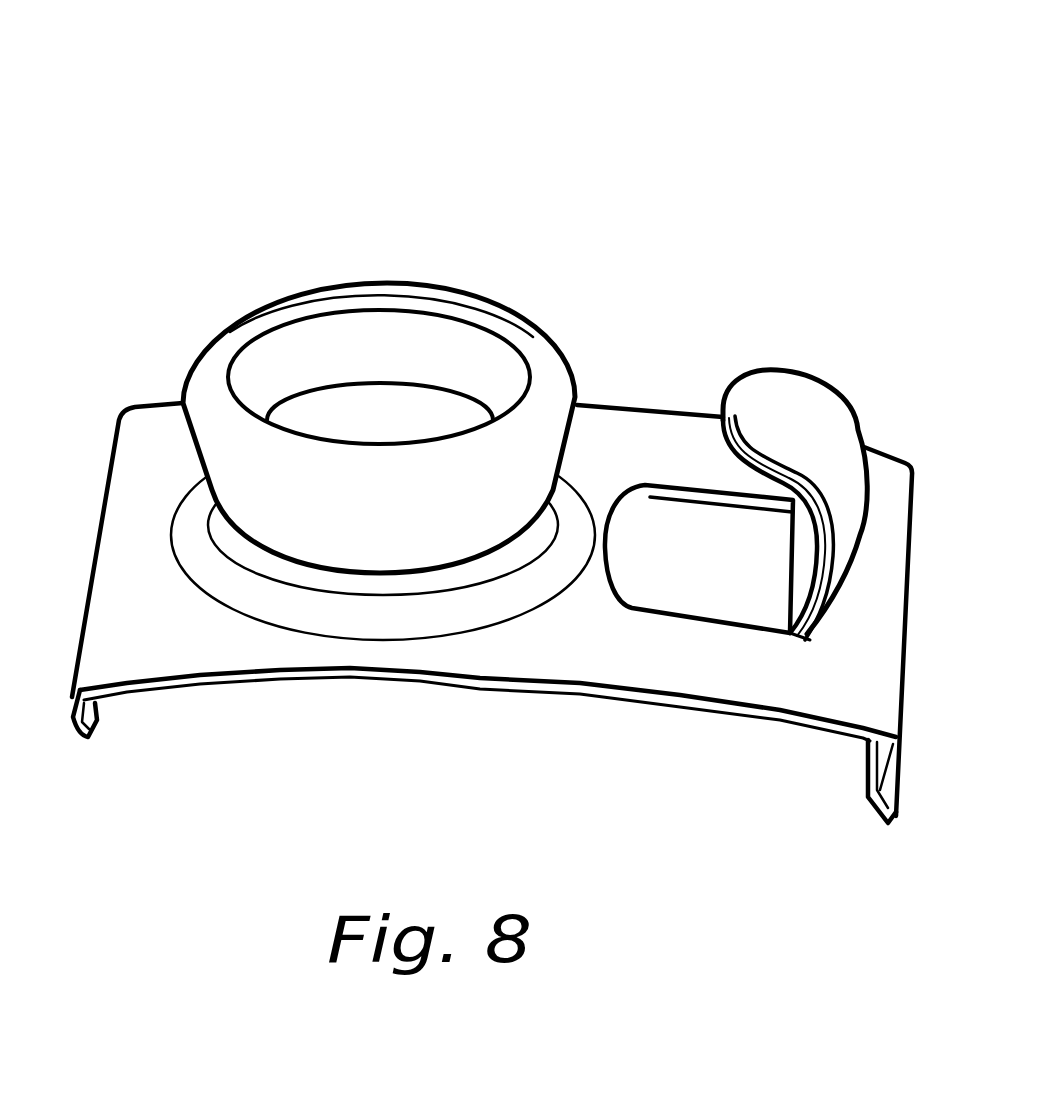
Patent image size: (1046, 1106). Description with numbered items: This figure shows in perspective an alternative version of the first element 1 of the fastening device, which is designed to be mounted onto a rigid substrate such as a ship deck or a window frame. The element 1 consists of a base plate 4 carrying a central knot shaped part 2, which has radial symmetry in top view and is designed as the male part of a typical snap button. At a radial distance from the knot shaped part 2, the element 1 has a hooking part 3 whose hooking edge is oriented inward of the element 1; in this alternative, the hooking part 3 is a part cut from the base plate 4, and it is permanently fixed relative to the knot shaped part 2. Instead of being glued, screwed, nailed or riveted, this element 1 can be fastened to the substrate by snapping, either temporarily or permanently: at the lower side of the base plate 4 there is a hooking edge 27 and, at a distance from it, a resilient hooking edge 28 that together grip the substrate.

The first element 1 is at (555, 123).
The knot shaped part 2 is at (193, 315).
The hooking part 3 is at (810, 347).
The base plate 4 is at (425, 688).
The hooking edge 27 is at (105, 711).
The resilient hooking edge 28 is at (857, 800).